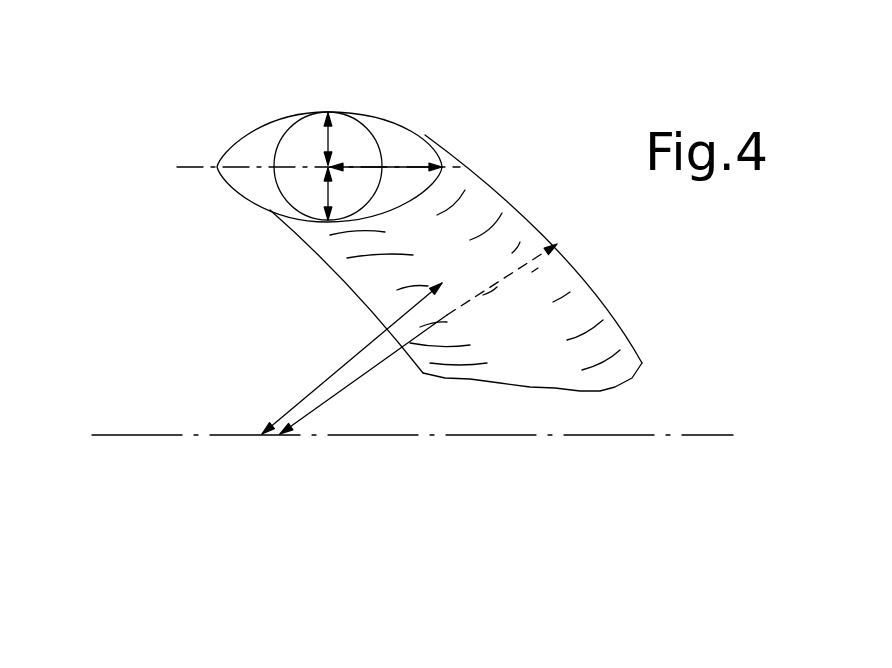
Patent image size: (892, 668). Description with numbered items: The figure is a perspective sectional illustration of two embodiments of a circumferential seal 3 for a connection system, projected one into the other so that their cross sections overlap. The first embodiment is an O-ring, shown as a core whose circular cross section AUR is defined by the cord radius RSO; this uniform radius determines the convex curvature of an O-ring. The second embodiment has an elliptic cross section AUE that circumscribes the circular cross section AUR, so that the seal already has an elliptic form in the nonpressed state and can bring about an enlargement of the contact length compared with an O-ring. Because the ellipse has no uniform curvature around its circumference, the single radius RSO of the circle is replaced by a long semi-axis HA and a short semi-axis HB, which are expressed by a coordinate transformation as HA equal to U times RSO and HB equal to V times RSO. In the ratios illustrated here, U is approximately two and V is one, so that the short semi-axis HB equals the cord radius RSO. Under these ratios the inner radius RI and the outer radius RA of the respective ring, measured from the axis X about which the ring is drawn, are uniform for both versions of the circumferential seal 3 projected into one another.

The circumferential seal 3 is at (293, 280).
The elliptic cross section AUE is at (237, 147).
The circular cross section AUR is at (308, 134).
The cord radius RSO is at (332, 139).
The short semi-axis HB is at (280, 213).
The long semi-axis HA is at (405, 165).
The inner radius RI is at (330, 375).
The outer radius RA is at (363, 377).
The axis of rotation X is at (408, 437).